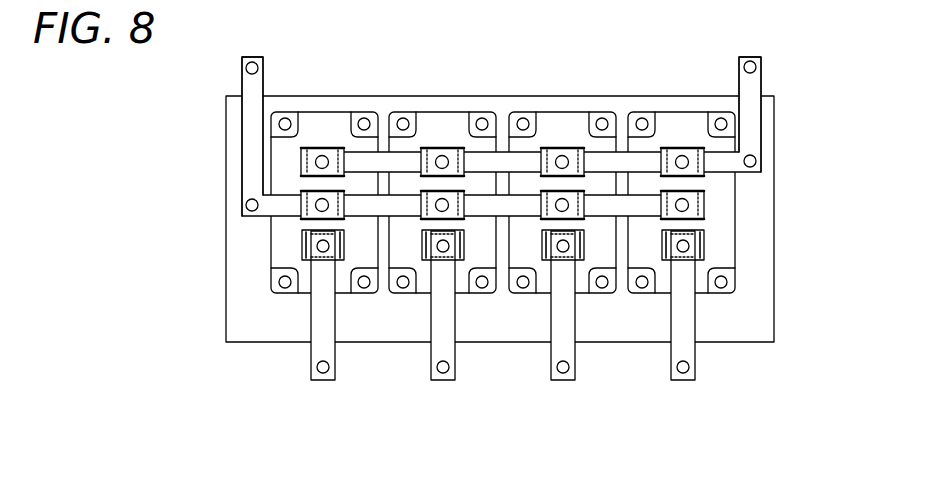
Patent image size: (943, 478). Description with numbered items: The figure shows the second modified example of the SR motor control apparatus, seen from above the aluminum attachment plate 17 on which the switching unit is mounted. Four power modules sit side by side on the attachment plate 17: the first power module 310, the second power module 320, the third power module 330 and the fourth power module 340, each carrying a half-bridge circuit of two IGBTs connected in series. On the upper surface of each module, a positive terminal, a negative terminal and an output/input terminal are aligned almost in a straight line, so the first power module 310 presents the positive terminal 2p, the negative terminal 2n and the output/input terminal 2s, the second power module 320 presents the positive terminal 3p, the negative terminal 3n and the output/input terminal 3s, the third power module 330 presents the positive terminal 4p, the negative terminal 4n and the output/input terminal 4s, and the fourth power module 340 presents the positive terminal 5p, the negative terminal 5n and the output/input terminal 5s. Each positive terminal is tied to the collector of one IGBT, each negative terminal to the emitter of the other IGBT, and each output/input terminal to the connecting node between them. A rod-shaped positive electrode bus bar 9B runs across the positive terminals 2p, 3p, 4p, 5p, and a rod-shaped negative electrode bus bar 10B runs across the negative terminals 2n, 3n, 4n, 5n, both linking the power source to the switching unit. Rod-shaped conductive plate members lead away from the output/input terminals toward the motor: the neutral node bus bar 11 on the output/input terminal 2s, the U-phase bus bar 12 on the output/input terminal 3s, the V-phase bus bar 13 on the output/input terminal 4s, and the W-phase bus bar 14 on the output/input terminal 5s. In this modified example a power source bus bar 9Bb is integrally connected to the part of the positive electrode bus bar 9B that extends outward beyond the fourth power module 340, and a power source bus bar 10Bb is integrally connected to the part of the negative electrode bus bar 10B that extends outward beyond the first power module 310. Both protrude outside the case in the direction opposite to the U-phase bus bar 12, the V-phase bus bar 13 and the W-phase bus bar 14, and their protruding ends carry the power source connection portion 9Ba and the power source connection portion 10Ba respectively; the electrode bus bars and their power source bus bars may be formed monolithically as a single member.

The attachment plate 17 is at (777, 137).
The first power module 310 is at (316, 110).
The second power module 320 is at (438, 110).
The third power module 330 is at (558, 110).
The fourth power module 340 is at (678, 110).
The positive terminal 2p is at (318, 148).
The positive terminal 3p is at (438, 148).
The positive terminal 4p is at (558, 148).
The positive terminal 5p is at (678, 148).
The negative terminal 2n is at (303, 220).
The negative terminal 3n is at (423, 220).
The negative terminal 4n is at (543, 220).
The negative terminal 5n is at (663, 220).
The output/input terminal 2s is at (302, 252).
The output/input terminal 3s is at (422, 252).
The output/input terminal 4s is at (542, 252).
The output/input terminal 5s is at (662, 252).
The neutral node bus bar 11 is at (323, 381).
The U-phase bus bar 12 is at (443, 381).
The V-phase bus bar 13 is at (563, 381).
The W-phase bus bar 14 is at (683, 381).
The positive electrode bus bar 9B is at (717, 175).
The power source connection portion 9Ba is at (750, 56).
The power source bus bar 9Bb is at (763, 80).
The negative electrode bus bar 10B is at (266, 220).
The power source connection portion 10Ba is at (252, 56).
The power source bus bar 10Bb is at (241, 83).